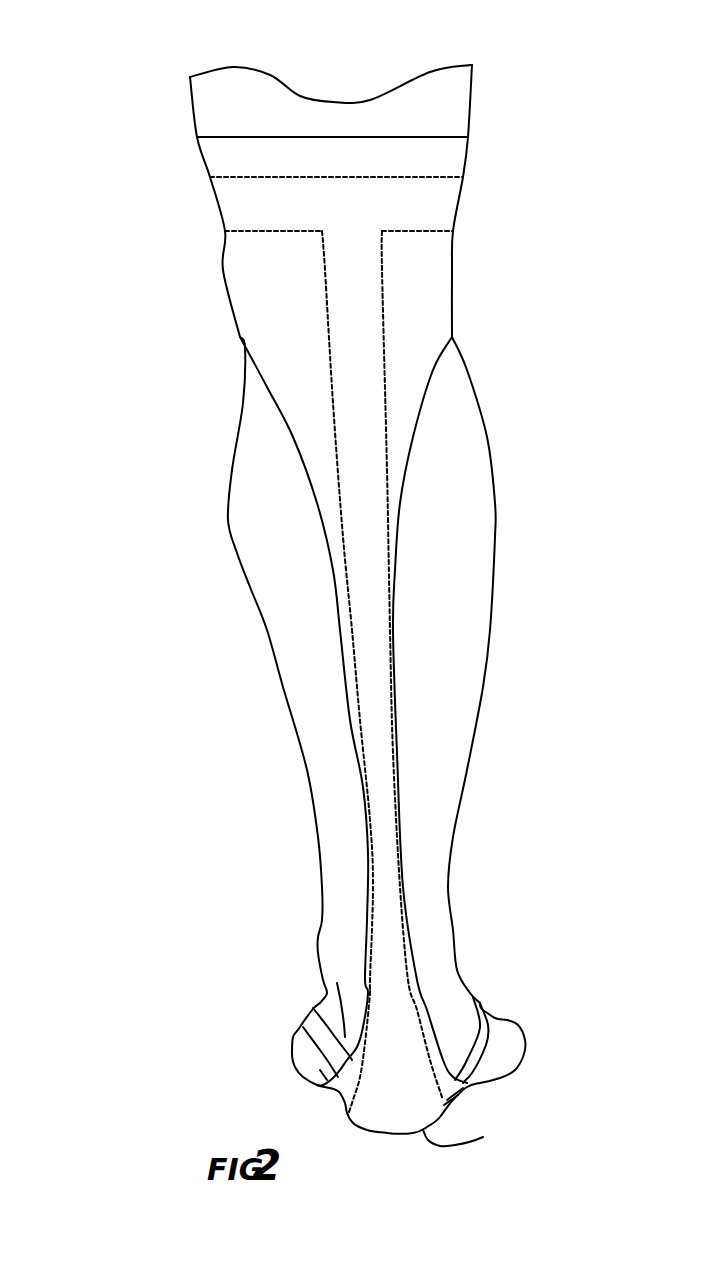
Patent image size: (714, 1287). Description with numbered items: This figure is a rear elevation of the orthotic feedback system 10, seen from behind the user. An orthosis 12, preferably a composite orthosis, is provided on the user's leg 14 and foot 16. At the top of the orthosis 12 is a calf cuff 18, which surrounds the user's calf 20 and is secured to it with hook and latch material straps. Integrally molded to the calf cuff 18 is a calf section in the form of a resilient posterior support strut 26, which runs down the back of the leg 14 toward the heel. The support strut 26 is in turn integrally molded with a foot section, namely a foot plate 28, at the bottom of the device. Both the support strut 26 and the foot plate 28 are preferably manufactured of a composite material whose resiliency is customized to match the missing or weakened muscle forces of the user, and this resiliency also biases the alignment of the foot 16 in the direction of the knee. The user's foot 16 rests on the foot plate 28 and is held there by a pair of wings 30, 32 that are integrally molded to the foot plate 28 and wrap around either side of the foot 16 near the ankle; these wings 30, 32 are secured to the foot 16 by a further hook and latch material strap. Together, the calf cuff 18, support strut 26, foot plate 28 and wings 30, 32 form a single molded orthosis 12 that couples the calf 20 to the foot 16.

The orthotic feedback system 10 is at (92, 301).
The orthosis 12 is at (480, 247).
The leg 14 is at (495, 473).
The foot 16 is at (490, 1010).
The calf cuff 18 is at (468, 156).
The calf 20 is at (236, 622).
The posterior support strut 26 is at (400, 637).
The foot plate 28 is at (483, 1137).
The wing 30 is at (458, 973).
The wing 32 is at (308, 1020).